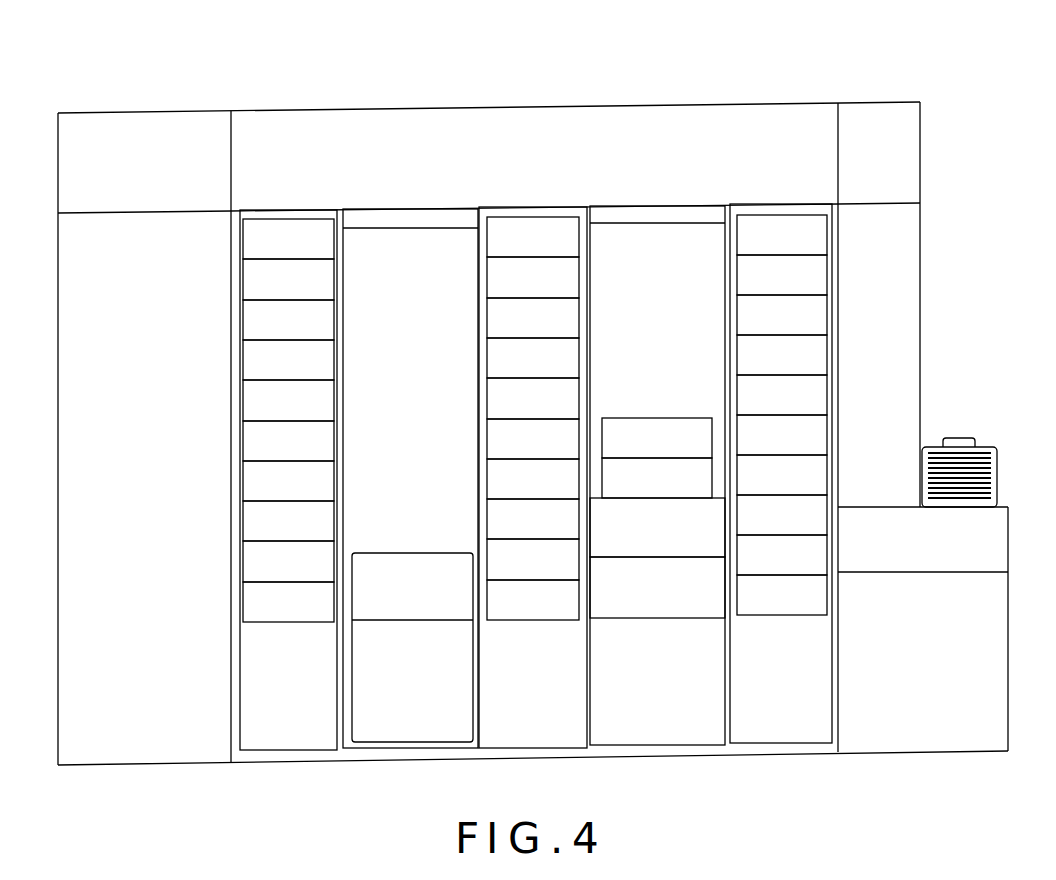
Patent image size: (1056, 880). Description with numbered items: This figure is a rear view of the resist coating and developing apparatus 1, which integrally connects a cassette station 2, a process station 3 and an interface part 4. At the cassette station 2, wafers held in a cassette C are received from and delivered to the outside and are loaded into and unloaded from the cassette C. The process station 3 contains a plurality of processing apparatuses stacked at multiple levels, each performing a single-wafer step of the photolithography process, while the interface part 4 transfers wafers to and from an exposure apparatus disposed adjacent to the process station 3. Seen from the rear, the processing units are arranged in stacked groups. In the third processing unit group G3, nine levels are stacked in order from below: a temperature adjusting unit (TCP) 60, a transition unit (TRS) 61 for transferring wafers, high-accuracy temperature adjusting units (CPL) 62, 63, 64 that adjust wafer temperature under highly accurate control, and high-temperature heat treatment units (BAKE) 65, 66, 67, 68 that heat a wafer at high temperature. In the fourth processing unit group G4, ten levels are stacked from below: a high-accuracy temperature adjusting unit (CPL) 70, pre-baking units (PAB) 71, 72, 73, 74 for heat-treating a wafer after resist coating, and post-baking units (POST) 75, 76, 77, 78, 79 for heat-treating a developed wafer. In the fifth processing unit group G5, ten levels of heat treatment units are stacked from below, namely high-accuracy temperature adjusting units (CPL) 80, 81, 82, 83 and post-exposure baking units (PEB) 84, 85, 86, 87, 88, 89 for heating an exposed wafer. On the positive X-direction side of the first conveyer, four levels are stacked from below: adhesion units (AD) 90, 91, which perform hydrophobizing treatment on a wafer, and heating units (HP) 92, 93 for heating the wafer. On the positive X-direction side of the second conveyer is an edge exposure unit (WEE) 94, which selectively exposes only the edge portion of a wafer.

The resist coating and developing apparatus 1 is at (629, 78).
The cassette station 2 is at (880, 97).
The process station 3 is at (513, 104).
The interface part 4 is at (200, 110).
The third processing unit group G3 is at (773, 199).
The fourth processing unit group G4 is at (531, 202).
The fifth processing unit group G5 is at (282, 206).
The temperature adjusting unit (TCP) 60 is at (828, 556).
The transition unit (TRS) 61 is at (828, 520).
The high-accuracy temperature adjusting unit (CPL) 62 is at (828, 472).
The high-accuracy temperature adjusting unit (CPL) 63 is at (828, 432).
The high-accuracy temperature adjusting unit (CPL) 64 is at (828, 392).
The high-temperature heat treatment unit (BAKE) 65 is at (828, 352).
The high-temperature heat treatment unit (BAKE) 66 is at (828, 312).
The high-temperature heat treatment unit (BAKE) 67 is at (828, 272).
The high-temperature heat treatment unit (BAKE) 68 is at (828, 232).
The high-accuracy temperature adjusting unit (CPL) 70 is at (545, 618).
The pre-baking unit (PAB) 71 is at (489, 553).
The pre-baking unit (PAB) 72 is at (489, 516).
The pre-baking unit (PAB) 73 is at (489, 476).
The pre-baking unit (PAB) 74 is at (489, 436).
The post-baking unit (POST) 75 is at (489, 395).
The post-baking unit (POST) 76 is at (489, 355).
The post-baking unit (POST) 77 is at (489, 315).
The post-baking unit (POST) 78 is at (489, 274).
The post-baking unit (POST) 79 is at (489, 234).
The high-accuracy temperature adjusting unit (CPL) 80 is at (243, 600).
The high-accuracy temperature adjusting unit (CPL) 81 is at (243, 559).
The high-accuracy temperature adjusting unit (CPL) 82 is at (243, 519).
The high-accuracy temperature adjusting unit (CPL) 83 is at (243, 479).
The post-exposure baking unit (PEB) 84 is at (243, 439).
The post-exposure baking unit (PEB) 85 is at (243, 398).
The post-exposure baking unit (PEB) 86 is at (243, 358).
The post-exposure baking unit (PEB) 87 is at (243, 318).
The post-exposure baking unit (PEB) 88 is at (243, 277).
The post-exposure baking unit (PEB) 89 is at (243, 237).
The adhesion unit (AD) 90 is at (695, 608).
The adhesion unit (AD) 91 is at (623, 550).
The heating unit (HP) 92 is at (619, 482).
The heating unit (HP) 93 is at (688, 437).
The edge exposure unit (WEE) 94 is at (423, 612).
The cassette C is at (988, 447).